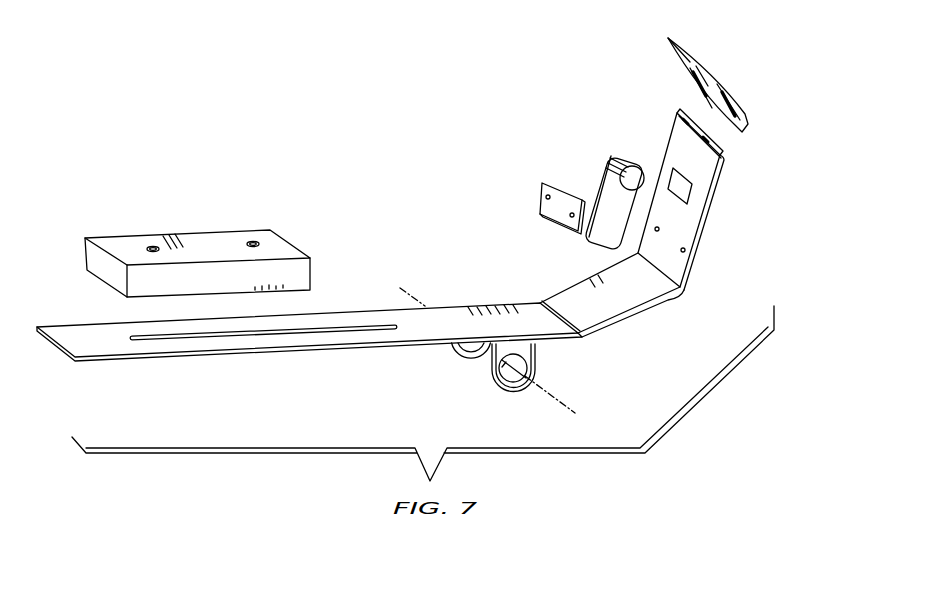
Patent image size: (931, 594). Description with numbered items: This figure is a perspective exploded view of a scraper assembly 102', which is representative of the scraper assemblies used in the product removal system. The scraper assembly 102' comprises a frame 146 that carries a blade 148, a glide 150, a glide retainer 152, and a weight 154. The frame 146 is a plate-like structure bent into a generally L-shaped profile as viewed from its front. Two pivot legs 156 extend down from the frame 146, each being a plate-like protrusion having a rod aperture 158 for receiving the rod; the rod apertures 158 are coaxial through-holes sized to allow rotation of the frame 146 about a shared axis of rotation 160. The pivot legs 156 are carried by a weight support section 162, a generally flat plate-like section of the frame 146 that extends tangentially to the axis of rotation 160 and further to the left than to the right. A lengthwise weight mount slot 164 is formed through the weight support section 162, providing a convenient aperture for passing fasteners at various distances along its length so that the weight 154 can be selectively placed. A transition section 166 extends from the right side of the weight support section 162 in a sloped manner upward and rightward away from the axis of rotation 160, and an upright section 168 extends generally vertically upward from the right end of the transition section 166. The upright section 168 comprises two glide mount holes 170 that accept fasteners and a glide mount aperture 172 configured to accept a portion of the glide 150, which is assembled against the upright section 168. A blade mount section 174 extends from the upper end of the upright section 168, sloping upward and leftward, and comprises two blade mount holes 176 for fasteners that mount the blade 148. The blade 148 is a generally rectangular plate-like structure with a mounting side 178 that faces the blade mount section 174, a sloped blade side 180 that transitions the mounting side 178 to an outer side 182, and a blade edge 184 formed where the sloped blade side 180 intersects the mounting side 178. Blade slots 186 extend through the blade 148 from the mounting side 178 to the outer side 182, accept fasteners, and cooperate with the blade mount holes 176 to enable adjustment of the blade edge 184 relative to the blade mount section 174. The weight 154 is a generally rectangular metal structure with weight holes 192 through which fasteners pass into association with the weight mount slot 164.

The scraper assembly 102' is at (416, 183).
The frame 146 is at (586, 343).
The blade 148 is at (745, 119).
The glide 150 is at (609, 184).
The glide retainer 152 is at (542, 192).
The weight 154 is at (231, 231).
The pivot legs 156 is at (466, 357).
The rod aperture 158 is at (453, 355).
The axis of rotation 160 is at (562, 404).
The weight support section 162 is at (93, 345).
The weight mount slot 164 is at (248, 335).
The transition section 166 is at (662, 297).
The upright section 168 is at (713, 208).
The glide mount holes 170 is at (660, 227).
The glide mount aperture 172 is at (694, 177).
The blade mount section 174 is at (675, 122).
The blade mount holes 176 is at (677, 129).
The mounting side 178 is at (703, 77).
The sloped blade side 180 is at (722, 80).
The outer side 182 is at (737, 96).
The blade edge 184 is at (678, 46).
The blade slots 186 is at (693, 98).
The weight holes 192 is at (153, 246).